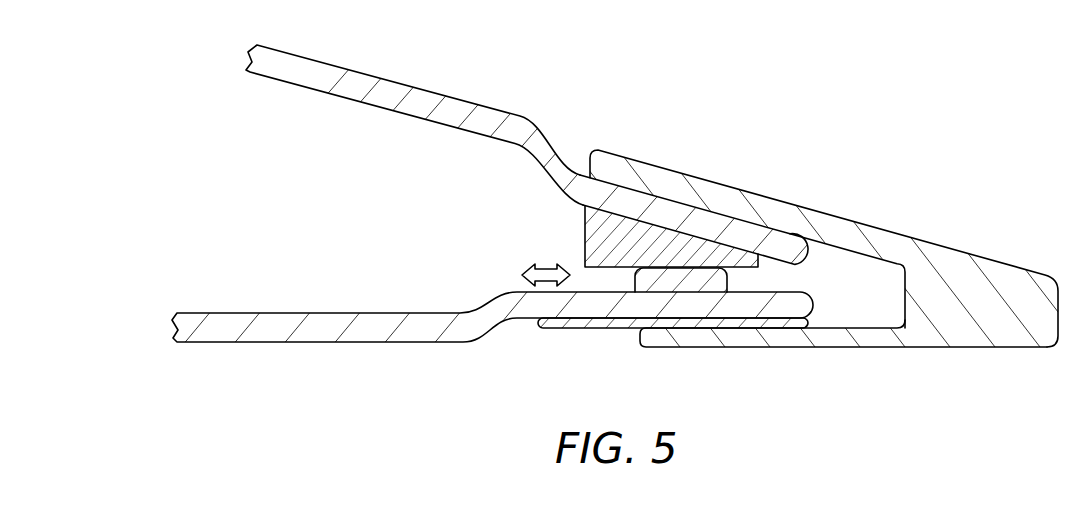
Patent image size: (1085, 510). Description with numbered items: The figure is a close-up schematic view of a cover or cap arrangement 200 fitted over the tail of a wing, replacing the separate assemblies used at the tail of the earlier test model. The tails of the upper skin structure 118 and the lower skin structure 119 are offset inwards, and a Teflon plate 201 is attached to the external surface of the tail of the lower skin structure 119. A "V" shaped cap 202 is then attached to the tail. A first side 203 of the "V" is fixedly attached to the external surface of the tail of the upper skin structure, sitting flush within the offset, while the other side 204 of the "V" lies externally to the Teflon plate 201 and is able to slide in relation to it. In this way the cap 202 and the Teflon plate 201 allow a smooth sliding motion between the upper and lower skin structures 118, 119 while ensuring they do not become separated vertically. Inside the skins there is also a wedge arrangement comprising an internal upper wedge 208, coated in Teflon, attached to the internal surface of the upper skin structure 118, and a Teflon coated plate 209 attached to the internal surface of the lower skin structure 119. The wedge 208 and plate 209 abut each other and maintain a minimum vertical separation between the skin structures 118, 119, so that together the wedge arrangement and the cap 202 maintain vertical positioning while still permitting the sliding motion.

The upper skin structure 118 is at (395, 92).
The lower skin structure 119 is at (357, 330).
The cover or cap arrangement 200 is at (909, 139).
The Teflon plate 201 is at (568, 322).
The "V" shaped cap 202 is at (990, 270).
The first side of the "V" 203 is at (758, 206).
The other side of the "V" 204 is at (835, 345).
The internal upper wedge 208 is at (650, 235).
The Teflon coated plate 209 is at (697, 278).